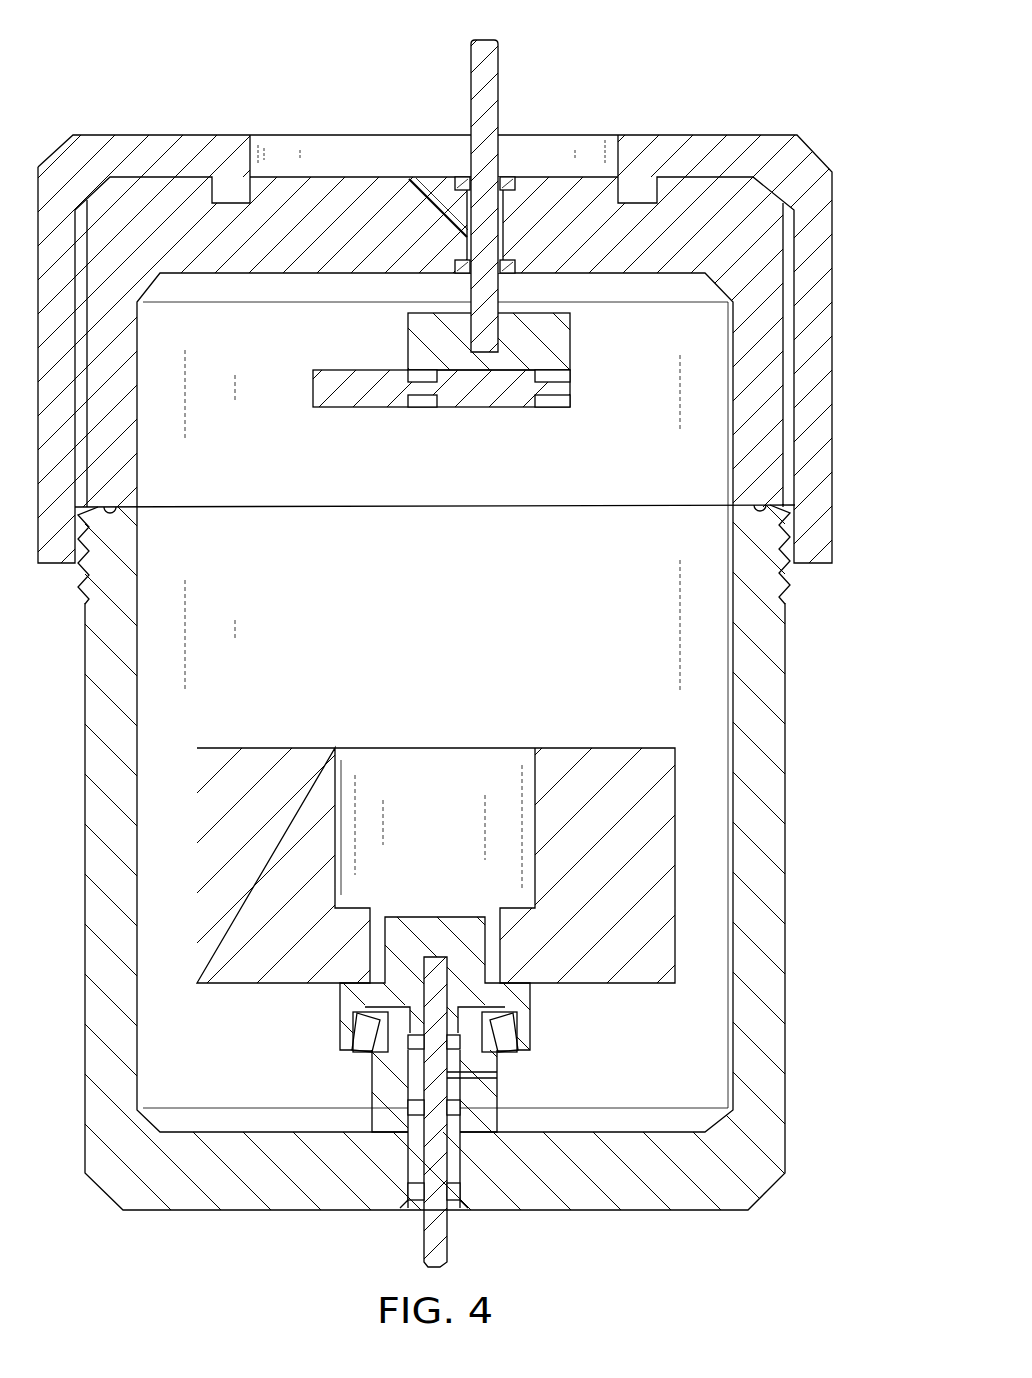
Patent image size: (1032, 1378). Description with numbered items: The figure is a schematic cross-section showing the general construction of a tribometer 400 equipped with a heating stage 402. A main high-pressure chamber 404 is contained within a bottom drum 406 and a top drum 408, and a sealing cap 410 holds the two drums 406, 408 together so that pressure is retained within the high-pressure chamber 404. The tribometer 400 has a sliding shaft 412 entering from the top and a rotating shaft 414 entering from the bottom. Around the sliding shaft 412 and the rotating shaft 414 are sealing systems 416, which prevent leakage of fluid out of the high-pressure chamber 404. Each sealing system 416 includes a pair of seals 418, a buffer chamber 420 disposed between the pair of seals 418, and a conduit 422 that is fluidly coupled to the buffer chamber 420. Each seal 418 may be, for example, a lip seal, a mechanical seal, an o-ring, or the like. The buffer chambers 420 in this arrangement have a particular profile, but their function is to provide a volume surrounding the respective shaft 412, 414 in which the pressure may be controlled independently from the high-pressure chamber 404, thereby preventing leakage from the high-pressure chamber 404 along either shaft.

The tribometer 400 is at (638, 56).
The heating stage 402 is at (265, 747).
The main high-pressure chamber 404 is at (458, 637).
The bottom drum 406 is at (787, 940).
The top drum 408 is at (768, 367).
The sealing cap 410 is at (835, 285).
The sliding shaft 412 is at (470, 62).
The rotating shaft 414 is at (424, 1233).
The sealing system 416 is at (313, 260).
The seal 418 is at (510, 178).
The buffer chamber 420 is at (505, 217).
The conduit 422 is at (458, 178).